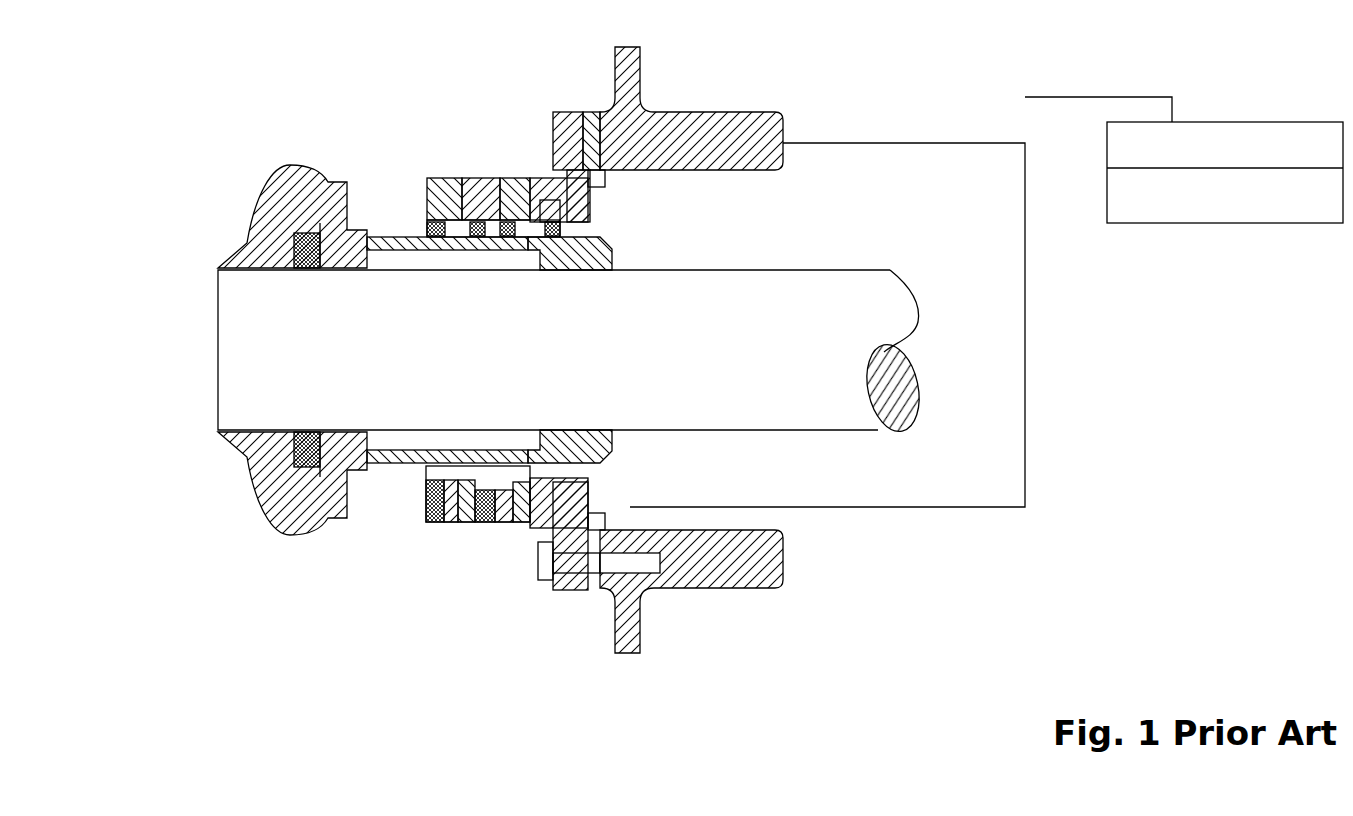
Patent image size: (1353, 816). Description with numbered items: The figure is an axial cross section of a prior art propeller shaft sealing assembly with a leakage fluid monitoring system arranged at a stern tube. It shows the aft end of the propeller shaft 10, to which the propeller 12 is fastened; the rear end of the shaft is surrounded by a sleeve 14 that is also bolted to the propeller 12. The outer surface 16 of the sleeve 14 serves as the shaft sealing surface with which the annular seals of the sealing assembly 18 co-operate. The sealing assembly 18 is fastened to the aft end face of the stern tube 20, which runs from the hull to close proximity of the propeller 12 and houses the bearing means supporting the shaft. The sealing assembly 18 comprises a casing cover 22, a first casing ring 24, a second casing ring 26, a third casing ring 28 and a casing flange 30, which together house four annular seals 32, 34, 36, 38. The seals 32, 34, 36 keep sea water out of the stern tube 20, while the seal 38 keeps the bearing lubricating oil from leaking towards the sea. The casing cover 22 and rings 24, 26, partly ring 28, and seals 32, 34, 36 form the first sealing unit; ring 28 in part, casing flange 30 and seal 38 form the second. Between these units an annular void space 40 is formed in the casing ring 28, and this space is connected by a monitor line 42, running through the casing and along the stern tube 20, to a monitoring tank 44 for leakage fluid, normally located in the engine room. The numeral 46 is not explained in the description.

The propeller shaft 10 is at (396, 366).
The propeller 12 is at (262, 255).
The sleeve 14 is at (313, 217).
The outer surface 16 is at (400, 233).
The sealing assembly 18 is at (432, 143).
The stern tube 20 is at (655, 130).
The casing cover 22 is at (422, 485).
The first casing ring 24 is at (458, 517).
The second casing ring 26 is at (485, 527).
The third casing ring 28 is at (528, 527).
The casing flange 30 is at (565, 128).
The annular seal 32 is at (433, 513).
The annular seal 34 is at (465, 525).
The annular seal 36 is at (512, 525).
The annular seal 38 is at (550, 203).
The annular void space 40 is at (473, 177).
The monitor line 42 is at (925, 143).
The monitoring tank 44 is at (1200, 211).
The fastener 46 is at (597, 517).